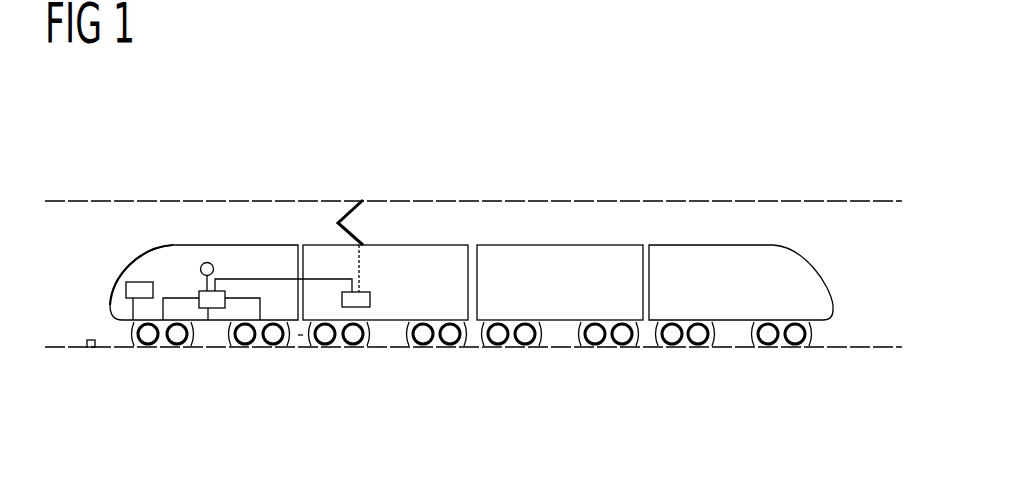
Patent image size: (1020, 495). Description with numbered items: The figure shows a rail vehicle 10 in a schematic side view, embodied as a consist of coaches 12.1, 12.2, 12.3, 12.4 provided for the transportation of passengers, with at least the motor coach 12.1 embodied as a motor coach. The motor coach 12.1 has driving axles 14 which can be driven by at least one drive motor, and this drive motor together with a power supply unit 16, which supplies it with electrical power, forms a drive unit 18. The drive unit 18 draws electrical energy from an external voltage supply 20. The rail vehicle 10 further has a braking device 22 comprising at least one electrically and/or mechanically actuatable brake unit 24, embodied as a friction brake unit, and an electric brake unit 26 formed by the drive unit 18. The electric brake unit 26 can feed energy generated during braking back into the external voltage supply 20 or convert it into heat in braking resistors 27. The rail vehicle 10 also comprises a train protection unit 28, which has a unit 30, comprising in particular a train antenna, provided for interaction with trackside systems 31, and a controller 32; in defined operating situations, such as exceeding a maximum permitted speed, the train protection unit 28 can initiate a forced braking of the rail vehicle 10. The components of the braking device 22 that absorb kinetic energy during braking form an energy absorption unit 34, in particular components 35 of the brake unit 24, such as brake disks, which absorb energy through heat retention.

The rail vehicle 10 is at (473, 283).
The motor coach 12.1 is at (272, 245).
The coach 12.2 is at (423, 245).
The coach 12.3 is at (568, 245).
The coach 12.4 is at (688, 245).
The driving axles 14 is at (148, 348).
The power supply unit 16 is at (210, 322).
The drive unit 18 is at (229, 340).
The external voltage supply 20 is at (746, 201).
The braking device 22 is at (360, 358).
The brake unit 24 is at (395, 355).
The electric brake unit 26 is at (193, 340).
The braking resistors 27 is at (204, 262).
The train protection unit 28 is at (122, 262).
The unit 30 is at (133, 350).
The trackside systems 31 is at (90, 350).
The controller 32 is at (139, 282).
The energy absorption unit 34 is at (321, 358).
The components 35 is at (305, 350).